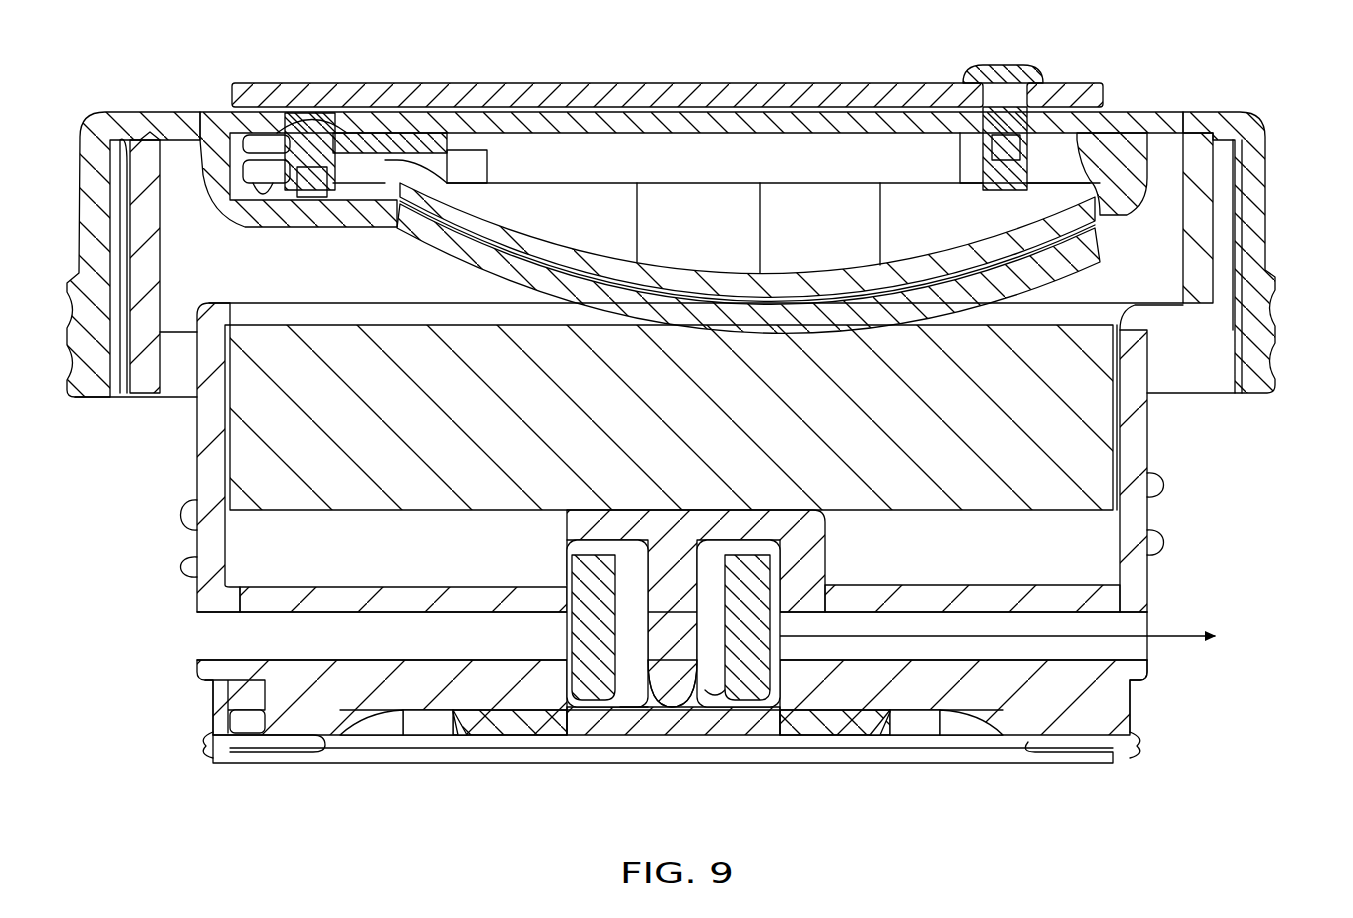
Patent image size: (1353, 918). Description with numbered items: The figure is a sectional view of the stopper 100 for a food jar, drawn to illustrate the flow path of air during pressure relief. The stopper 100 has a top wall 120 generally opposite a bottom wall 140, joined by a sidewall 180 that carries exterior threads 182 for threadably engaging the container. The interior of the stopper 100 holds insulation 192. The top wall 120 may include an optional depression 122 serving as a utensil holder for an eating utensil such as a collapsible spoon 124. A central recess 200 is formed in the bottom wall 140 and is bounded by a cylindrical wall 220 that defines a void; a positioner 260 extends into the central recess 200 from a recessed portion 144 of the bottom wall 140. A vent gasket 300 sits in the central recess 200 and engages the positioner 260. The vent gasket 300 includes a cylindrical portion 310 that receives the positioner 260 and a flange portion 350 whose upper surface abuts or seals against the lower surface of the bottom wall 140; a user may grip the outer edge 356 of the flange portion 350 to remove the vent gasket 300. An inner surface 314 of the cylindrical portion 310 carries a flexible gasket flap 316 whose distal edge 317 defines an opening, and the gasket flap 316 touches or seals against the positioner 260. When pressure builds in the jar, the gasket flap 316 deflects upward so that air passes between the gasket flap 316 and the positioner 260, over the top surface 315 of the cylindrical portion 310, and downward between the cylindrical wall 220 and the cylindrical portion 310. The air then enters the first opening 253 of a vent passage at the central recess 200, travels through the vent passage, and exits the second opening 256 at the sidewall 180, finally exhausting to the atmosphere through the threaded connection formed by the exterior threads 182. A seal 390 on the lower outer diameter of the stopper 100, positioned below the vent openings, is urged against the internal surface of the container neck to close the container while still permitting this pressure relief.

The stopper 100 is at (1291, 110).
The top wall 120 is at (172, 118).
The depression 122 is at (1060, 256).
The collapsible spoon 124 is at (682, 118).
The bottom wall 140 is at (275, 727).
The recessed portion 144 is at (595, 522).
The sidewall 180 is at (1140, 423).
The exterior threads 182 is at (1165, 490).
The insulation 192 is at (1060, 352).
The central recess 200 is at (630, 730).
The cylindrical wall 220 is at (565, 592).
The first opening 253 is at (815, 655).
The second opening 256 is at (195, 628).
The positioner 260 is at (665, 660).
The vent gasket 300 is at (585, 722).
The cylindrical portion 310 is at (745, 672).
The inner surface 314 is at (612, 572).
The top surface 315 is at (600, 542).
The gasket flap 316 is at (715, 690).
The distal edge 317 is at (705, 560).
The flange portion 350 is at (832, 722).
The outer edge 356 is at (882, 722).
The seal 390 is at (1108, 760).